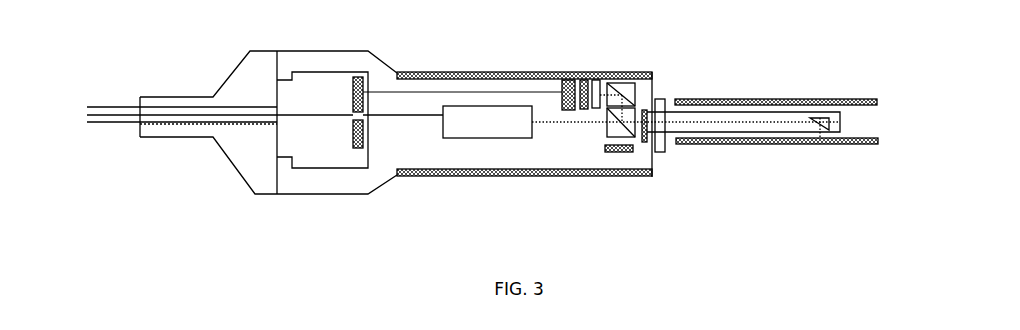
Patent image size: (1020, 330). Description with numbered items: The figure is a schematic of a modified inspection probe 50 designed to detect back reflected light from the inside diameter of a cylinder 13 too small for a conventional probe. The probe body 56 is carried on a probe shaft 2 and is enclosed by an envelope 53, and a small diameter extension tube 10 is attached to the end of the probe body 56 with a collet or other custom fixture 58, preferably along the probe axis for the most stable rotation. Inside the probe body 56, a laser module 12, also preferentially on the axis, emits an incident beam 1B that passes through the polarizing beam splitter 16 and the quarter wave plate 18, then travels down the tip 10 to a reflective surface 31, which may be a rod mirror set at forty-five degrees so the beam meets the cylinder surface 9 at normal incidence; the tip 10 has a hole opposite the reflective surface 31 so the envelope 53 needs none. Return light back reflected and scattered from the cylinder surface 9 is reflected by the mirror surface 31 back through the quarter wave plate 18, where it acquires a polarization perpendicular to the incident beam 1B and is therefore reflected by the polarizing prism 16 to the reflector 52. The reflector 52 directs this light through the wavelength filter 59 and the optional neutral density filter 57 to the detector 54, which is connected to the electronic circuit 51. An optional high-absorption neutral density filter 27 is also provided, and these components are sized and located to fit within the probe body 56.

The probe shaft 2 is at (235, 71).
The modified probe 50 is at (448, 58).
The probe body 56 is at (320, 63).
The electronic circuit 51 is at (352, 91).
The envelope 53 is at (499, 70).
The laser module 12 is at (475, 129).
The incident beam 1B is at (686, 118).
The detector 54 is at (561, 82).
The optional neutral density filter 57 is at (585, 80).
The wavelength filter 59 is at (602, 84).
The reflector 52 is at (628, 93).
The polarizing beam splitter 16 is at (611, 132).
The quarter wave plate 18 is at (643, 144).
The optional high-absorption neutral density filter 27 is at (620, 154).
The collet or other custom fixture 58 is at (660, 147).
The extension tube 10 is at (755, 111).
The cylinder 13 is at (858, 107).
The cylinder surface 9 is at (773, 143).
The reflective surface 31 is at (822, 126).